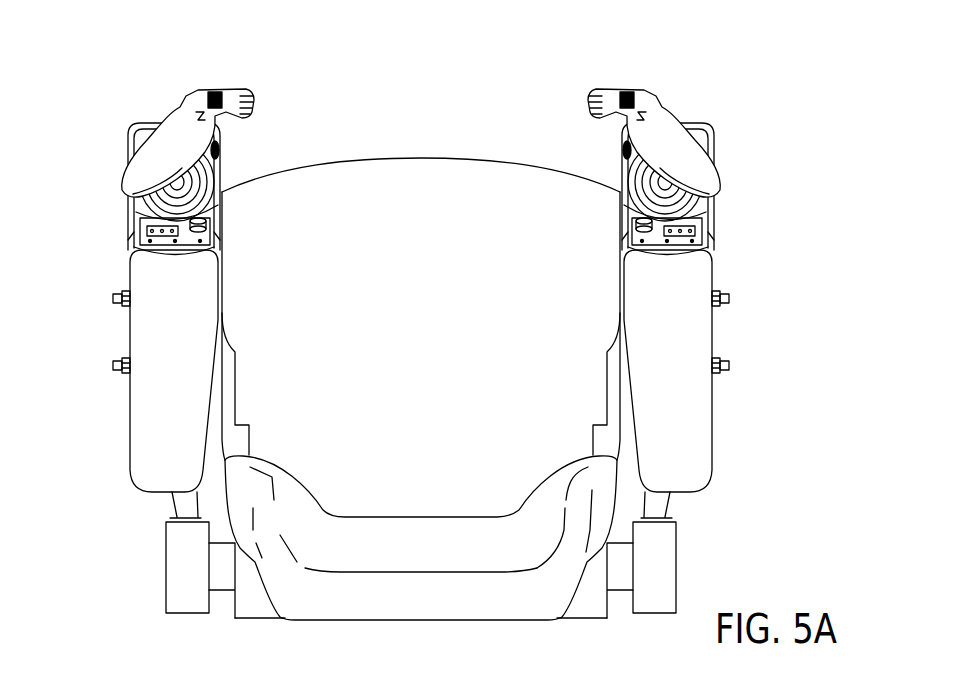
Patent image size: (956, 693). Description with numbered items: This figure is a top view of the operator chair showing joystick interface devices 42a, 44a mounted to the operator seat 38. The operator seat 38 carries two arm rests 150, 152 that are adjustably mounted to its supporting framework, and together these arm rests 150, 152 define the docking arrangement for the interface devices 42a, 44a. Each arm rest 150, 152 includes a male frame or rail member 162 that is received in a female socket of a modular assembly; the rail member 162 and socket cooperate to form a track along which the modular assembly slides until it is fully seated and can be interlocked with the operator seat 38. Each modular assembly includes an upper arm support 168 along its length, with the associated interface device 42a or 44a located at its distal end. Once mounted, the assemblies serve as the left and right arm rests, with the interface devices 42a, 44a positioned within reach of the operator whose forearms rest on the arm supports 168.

The operator seat 38 is at (544, 599).
The interface device 42a is at (178, 138).
The interface device 44a is at (664, 138).
The arm rest 150 is at (120, 458).
The arm rest 152 is at (722, 452).
The rail member 162 is at (186, 517).
The upper arm support 168 is at (166, 353).